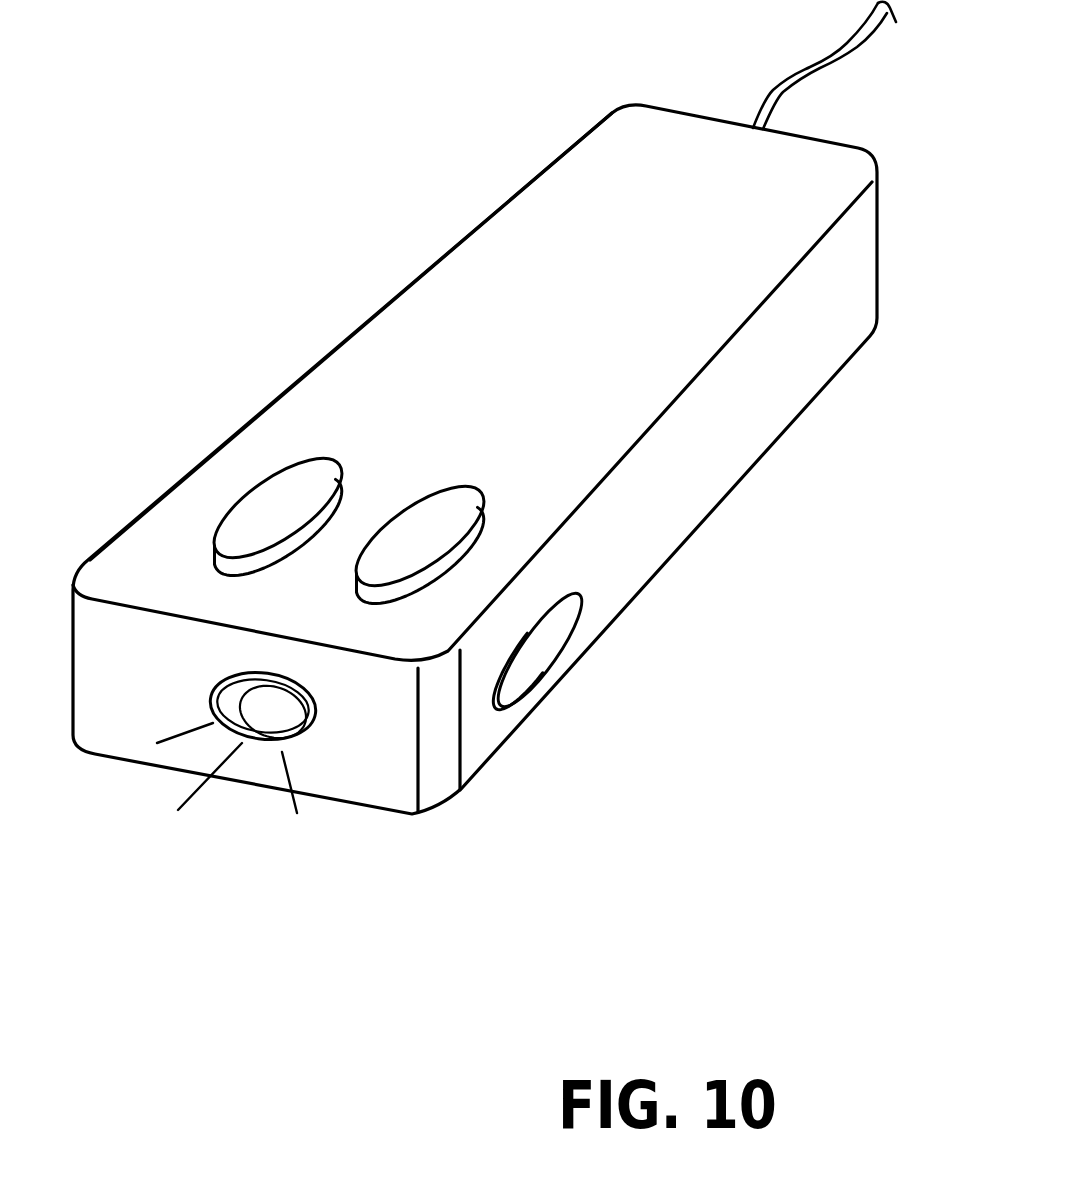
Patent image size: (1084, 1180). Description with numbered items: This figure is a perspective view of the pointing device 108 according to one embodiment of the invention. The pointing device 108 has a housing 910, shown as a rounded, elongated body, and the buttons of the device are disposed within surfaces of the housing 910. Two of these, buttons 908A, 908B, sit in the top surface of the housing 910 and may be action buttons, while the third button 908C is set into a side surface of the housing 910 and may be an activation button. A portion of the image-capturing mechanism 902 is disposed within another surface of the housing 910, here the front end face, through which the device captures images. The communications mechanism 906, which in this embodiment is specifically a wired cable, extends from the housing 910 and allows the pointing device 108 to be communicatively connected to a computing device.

The pointing device 108 is at (182, 211).
The image-capturing mechanism 902 is at (315, 707).
The communications mechanism 906 is at (868, 47).
The button 908A is at (316, 458).
The button 908B is at (463, 485).
The button 908C is at (582, 593).
The housing 910 is at (572, 126).